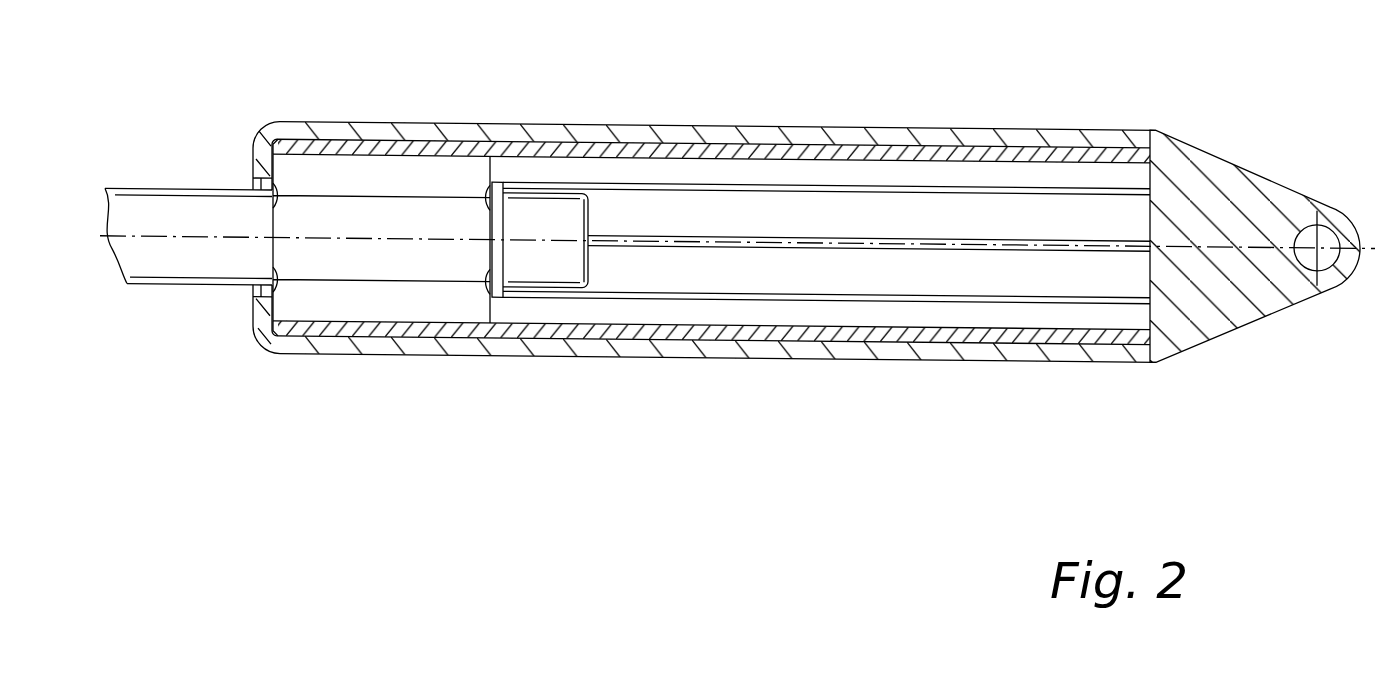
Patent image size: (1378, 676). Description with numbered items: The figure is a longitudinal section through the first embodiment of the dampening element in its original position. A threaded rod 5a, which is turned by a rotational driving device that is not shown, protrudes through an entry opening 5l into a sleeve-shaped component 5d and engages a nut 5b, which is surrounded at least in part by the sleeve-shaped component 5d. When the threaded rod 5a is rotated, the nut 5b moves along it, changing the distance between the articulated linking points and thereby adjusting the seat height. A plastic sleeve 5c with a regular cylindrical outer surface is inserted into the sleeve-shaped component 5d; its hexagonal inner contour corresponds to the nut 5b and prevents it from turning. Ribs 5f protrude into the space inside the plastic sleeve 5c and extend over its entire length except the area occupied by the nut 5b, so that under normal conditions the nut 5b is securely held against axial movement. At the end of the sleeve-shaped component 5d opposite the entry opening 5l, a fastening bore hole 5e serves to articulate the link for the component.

The threaded rod 5a is at (160, 186).
The entry opening 5l is at (250, 183).
The nut 5b is at (310, 183).
The plastic sleeve 5c is at (649, 153).
The sleeve-shaped component 5d is at (915, 128).
The ribs 5f is at (1032, 187).
The fastening bore hole 5e is at (1312, 235).